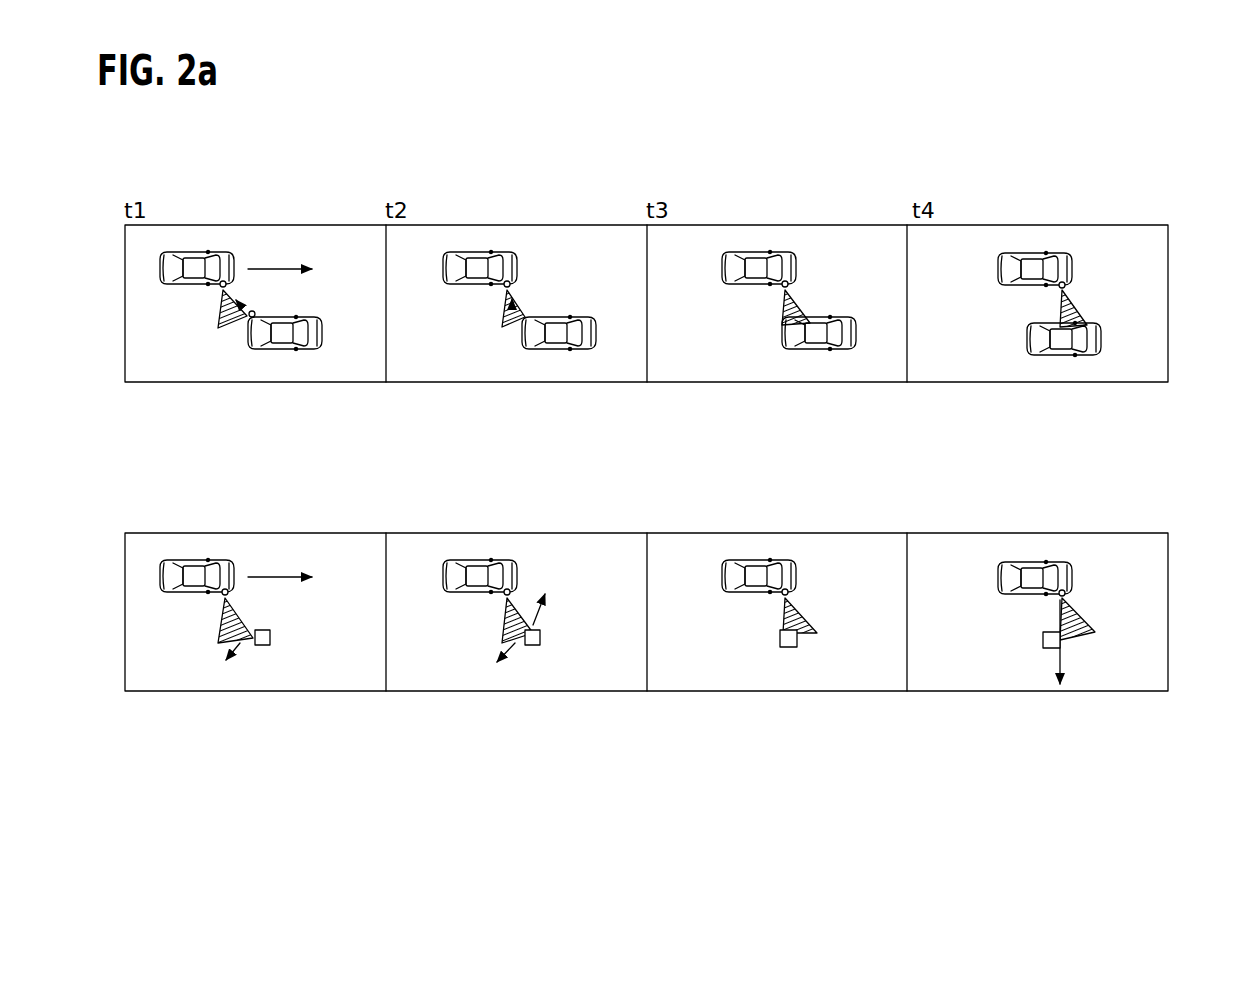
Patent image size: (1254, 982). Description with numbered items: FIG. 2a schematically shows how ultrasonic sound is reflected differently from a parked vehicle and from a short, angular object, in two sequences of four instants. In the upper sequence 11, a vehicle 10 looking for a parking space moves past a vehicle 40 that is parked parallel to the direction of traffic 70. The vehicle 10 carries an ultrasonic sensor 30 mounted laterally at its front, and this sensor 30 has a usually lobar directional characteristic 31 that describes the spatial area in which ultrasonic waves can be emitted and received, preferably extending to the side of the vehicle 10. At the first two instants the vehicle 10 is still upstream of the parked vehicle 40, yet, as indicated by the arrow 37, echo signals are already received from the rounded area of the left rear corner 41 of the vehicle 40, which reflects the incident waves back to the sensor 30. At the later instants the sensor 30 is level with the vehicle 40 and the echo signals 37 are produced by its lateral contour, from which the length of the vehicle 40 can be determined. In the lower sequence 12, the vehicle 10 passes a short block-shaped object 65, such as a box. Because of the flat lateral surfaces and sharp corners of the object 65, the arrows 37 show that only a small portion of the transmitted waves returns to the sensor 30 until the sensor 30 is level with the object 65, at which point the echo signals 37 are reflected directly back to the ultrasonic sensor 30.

The vehicle 10 is at (193, 252).
The first scenario sequence 11 is at (1166, 200).
The second scenario sequence 12 is at (1166, 509).
The ultrasonic sensor 30 is at (220, 288).
The directional characteristic 31 is at (226, 330).
The echo signals 37 is at (219, 302).
The parked vehicle 40 is at (285, 353).
The left rear corner 41 is at (256, 311).
The block-shaped object 65 is at (272, 638).
The direction of traffic 70 is at (265, 266).